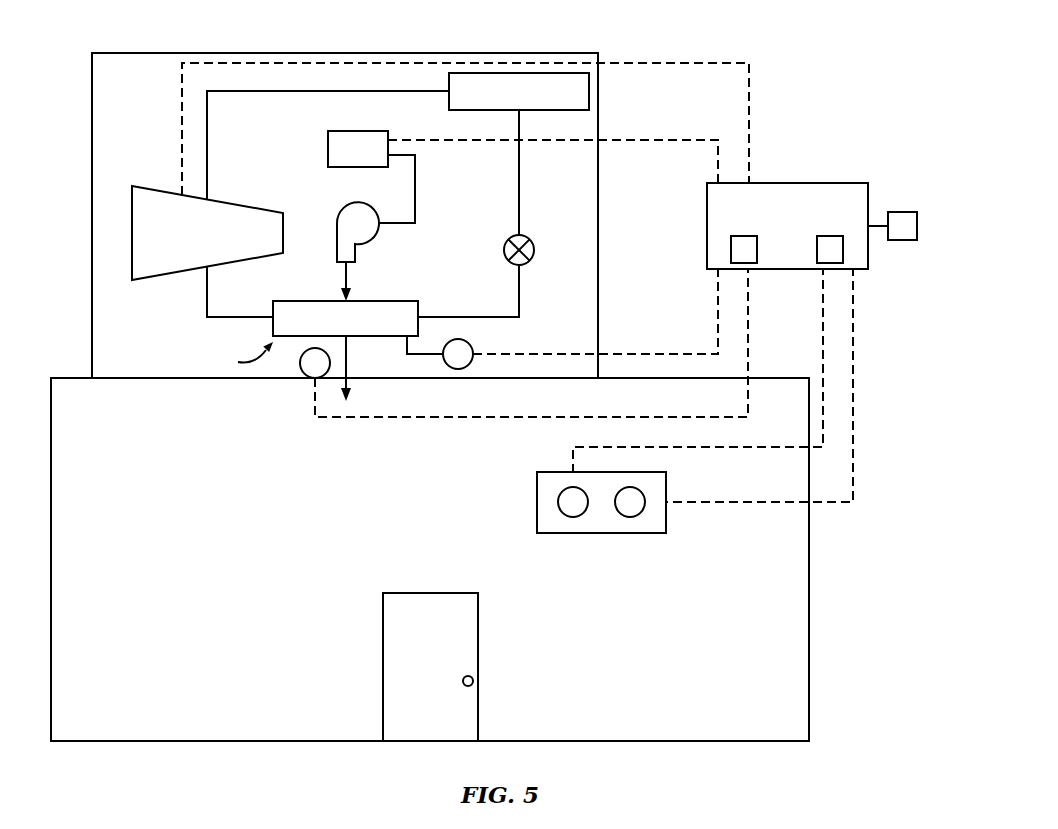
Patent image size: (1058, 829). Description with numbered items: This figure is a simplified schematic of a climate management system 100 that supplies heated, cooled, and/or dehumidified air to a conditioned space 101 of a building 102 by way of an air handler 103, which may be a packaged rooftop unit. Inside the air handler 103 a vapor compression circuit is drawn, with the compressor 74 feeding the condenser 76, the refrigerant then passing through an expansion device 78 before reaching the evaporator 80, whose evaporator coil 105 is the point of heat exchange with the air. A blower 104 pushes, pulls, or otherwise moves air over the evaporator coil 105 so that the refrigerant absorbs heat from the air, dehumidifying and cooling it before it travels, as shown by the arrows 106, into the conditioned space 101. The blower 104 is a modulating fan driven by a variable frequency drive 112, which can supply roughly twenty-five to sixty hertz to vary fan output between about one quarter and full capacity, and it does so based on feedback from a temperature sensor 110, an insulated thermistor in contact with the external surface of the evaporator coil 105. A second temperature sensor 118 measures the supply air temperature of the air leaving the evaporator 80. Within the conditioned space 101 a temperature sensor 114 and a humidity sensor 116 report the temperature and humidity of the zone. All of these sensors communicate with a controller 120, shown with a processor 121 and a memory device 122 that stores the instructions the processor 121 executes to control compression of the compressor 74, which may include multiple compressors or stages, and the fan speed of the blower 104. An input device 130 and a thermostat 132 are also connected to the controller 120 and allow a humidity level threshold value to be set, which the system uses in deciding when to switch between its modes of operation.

The climate management system 100 is at (738, 40).
The conditioned space 101 is at (446, 556).
The building 102 is at (810, 560).
The air handler 103 is at (345, 53).
The compressor 74 is at (237, 203).
The condenser 76 is at (589, 97).
The expansion device 78 is at (534, 250).
The evaporator 80 is at (312, 300).
The blower 104 is at (356, 203).
The evaporator coil 105 is at (236, 357).
The arrows 106 is at (349, 281).
The temperature sensor 110 is at (469, 344).
The variable frequency drive 112 is at (358, 131).
The temperature sensor 114 is at (630, 517).
The humidity sensor 116 is at (570, 517).
The temperature sensor 118 is at (303, 372).
The controller 120 is at (787, 183).
The processor 121 is at (731, 250).
The memory device 122 is at (843, 252).
The input device 130 is at (903, 212).
The thermostat 132 is at (537, 500).